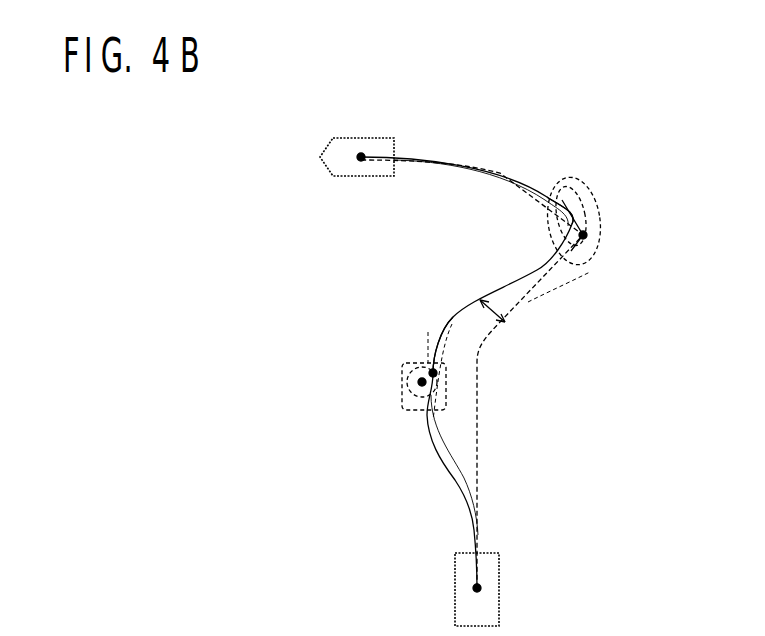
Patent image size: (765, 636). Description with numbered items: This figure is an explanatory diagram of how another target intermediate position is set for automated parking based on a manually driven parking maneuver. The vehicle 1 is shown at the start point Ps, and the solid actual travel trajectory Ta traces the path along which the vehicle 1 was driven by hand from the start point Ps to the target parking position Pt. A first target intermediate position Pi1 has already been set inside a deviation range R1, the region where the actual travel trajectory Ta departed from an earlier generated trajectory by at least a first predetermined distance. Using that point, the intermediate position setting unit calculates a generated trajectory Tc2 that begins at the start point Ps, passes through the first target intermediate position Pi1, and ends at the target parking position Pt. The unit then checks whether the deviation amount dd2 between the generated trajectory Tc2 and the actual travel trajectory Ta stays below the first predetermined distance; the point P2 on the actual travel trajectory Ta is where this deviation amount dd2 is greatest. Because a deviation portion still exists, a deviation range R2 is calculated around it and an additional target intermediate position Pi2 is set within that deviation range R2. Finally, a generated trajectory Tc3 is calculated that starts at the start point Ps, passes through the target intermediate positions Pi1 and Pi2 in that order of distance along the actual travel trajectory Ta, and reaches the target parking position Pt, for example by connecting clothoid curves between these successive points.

The vehicle 1 is at (322, 140).
The start point Ps is at (361, 150).
The deviation range R1 is at (570, 181).
The first target intermediate position Pi1 is at (592, 234).
The actual travel trajectory Ta is at (546, 268).
The generated trajectory Tc3 is at (558, 292).
The deviation range R2 is at (420, 347).
The additional target intermediate position Pi2 is at (430, 372).
The point P2 is at (420, 383).
The deviation amount dd2 is at (487, 320).
The generated trajectory Tc2 is at (482, 430).
The target parking position Pt is at (488, 587).